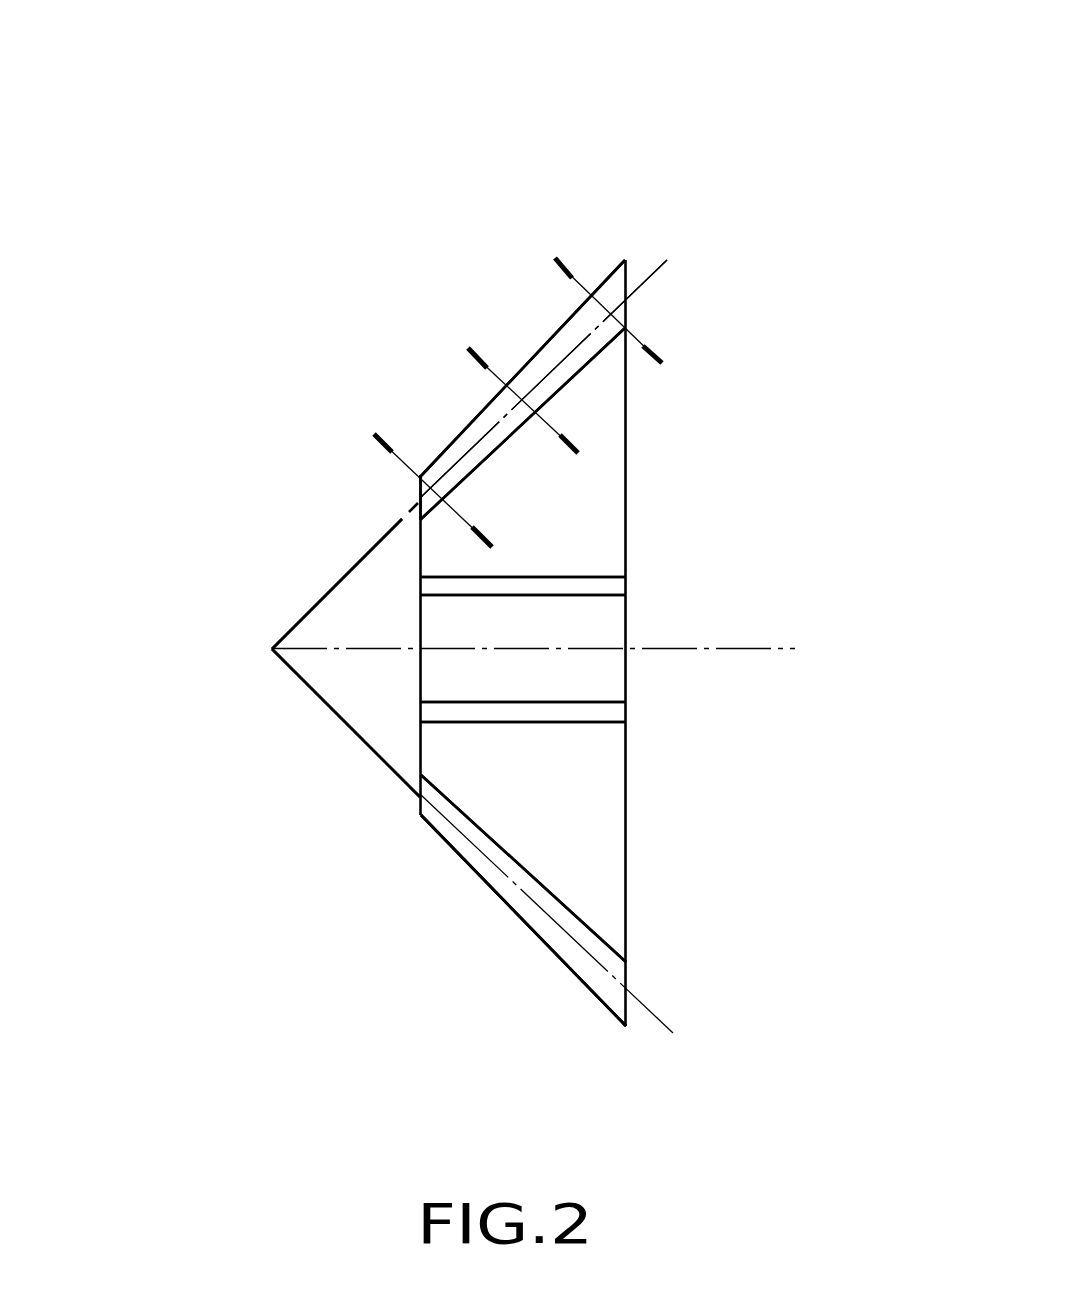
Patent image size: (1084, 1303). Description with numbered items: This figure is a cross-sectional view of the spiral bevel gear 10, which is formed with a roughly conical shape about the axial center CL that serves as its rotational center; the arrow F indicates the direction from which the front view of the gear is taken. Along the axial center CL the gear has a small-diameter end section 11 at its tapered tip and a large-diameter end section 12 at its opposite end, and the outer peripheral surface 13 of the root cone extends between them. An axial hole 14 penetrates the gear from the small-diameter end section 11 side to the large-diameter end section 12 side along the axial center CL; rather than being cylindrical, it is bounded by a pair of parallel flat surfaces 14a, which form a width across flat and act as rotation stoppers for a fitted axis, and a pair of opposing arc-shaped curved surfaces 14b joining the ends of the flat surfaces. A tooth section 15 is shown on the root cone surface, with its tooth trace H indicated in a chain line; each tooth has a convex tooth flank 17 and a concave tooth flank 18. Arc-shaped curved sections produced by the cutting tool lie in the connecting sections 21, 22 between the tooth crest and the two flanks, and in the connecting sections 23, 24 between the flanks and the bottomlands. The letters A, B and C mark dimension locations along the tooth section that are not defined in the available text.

The spiral bevel gear 10 is at (613, 155).
The small-diameter end section 11 is at (417, 560).
The large-diameter end section 12 is at (628, 488).
The outer peripheral surface of root cone 13 is at (420, 475).
The axial hole 14 is at (612, 678).
The flat surfaces 14a is at (600, 622).
The arc-shaped curved surfaces 14b is at (580, 588).
The tooth section 15 is at (517, 370).
The convex tooth flank 17 is at (480, 437).
The concave tooth flank 18 is at (523, 900).
The connecting section 21 is at (533, 350).
The connecting section 22 is at (552, 950).
The connecting section 23 is at (553, 398).
The connecting section 24 is at (540, 880).
The arrow F is at (250, 648).
The tooth trace H is at (318, 598).
The axial center CL is at (706, 648).
The dimension A is at (378, 452).
The dimension B is at (476, 358).
The dimension C is at (565, 270).